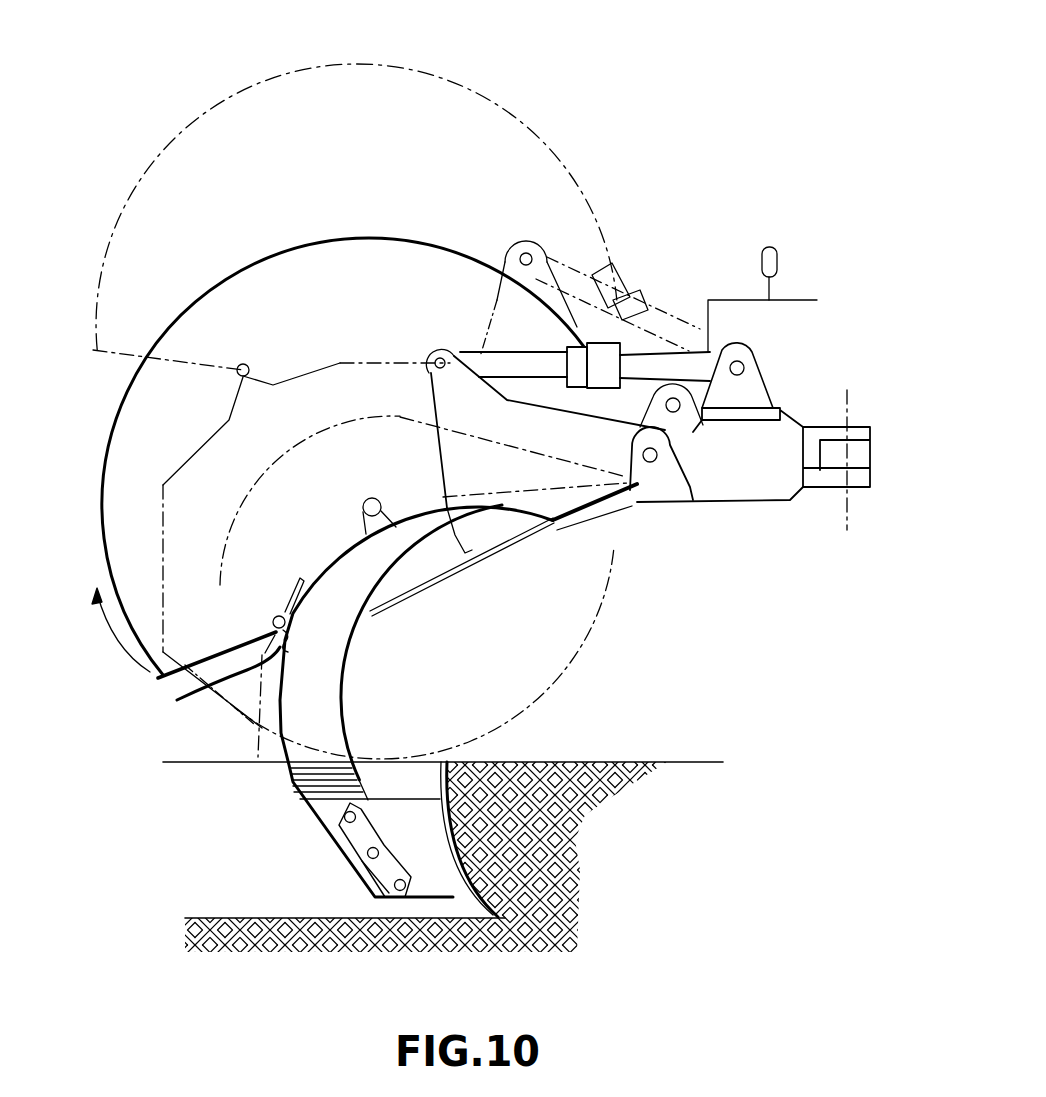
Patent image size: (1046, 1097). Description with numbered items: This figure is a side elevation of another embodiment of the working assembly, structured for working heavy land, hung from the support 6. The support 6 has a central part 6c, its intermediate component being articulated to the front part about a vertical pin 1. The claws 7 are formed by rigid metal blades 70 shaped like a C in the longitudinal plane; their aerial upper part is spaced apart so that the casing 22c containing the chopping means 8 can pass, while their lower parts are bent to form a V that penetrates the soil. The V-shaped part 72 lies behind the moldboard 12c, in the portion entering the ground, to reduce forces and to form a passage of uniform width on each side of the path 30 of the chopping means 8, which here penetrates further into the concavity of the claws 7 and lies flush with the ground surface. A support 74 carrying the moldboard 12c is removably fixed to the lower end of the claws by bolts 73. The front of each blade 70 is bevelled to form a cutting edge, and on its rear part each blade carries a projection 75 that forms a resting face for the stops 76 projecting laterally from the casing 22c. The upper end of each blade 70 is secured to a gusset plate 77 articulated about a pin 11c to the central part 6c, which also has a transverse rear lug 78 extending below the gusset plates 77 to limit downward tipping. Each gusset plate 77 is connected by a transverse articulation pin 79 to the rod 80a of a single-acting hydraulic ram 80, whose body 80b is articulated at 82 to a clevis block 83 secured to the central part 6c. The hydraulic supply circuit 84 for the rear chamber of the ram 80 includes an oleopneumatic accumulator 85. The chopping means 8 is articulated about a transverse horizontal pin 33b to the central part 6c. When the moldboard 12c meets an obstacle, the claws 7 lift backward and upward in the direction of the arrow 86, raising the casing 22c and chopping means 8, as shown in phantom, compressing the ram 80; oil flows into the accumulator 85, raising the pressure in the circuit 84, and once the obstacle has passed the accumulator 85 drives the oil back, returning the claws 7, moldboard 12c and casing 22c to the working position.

The vertical pin 1 is at (845, 413).
The support 6 is at (740, 515).
The central part of the support 6c is at (772, 508).
The claws 7 is at (356, 689).
The chopping means 8 is at (503, 683).
The pin 11c is at (650, 462).
The moldboard 12c is at (441, 783).
The casing 22c is at (287, 277).
The path of the chopping means 30 is at (590, 637).
The transverse horizontal pin 33b is at (680, 415).
The blade 70 is at (363, 603).
The V-shaped part 72 is at (303, 783).
The bolts 73 is at (398, 893).
The support 74 is at (453, 890).
The projection 75 is at (215, 685).
The stops 76 is at (278, 612).
The gusset plate 77 is at (493, 523).
The transverse rear lug 78 is at (575, 522).
The transverse articulation pin 79 is at (440, 358).
The single-acting hydraulic ram 80 is at (606, 337).
The rod of the hydraulic ram 80a is at (500, 363).
The body of the hydraulic ram 80b is at (673, 363).
The articulation 82 is at (740, 375).
The clevis block 83 is at (750, 353).
The hydraulic supply circuit 84 is at (712, 320).
The oleopneumatic accumulator 85 is at (777, 257).
The arrow 86 is at (118, 660).